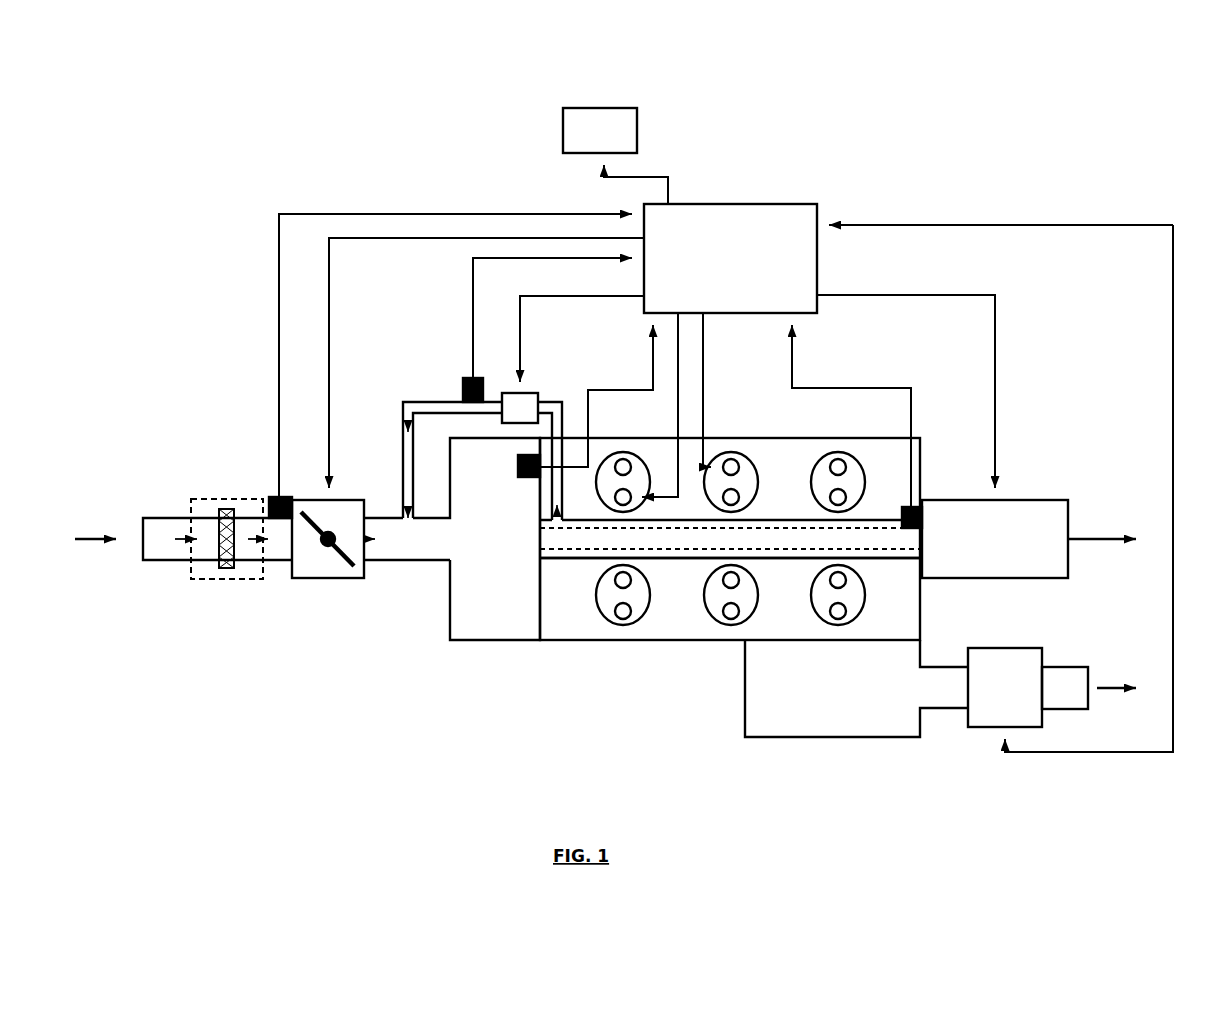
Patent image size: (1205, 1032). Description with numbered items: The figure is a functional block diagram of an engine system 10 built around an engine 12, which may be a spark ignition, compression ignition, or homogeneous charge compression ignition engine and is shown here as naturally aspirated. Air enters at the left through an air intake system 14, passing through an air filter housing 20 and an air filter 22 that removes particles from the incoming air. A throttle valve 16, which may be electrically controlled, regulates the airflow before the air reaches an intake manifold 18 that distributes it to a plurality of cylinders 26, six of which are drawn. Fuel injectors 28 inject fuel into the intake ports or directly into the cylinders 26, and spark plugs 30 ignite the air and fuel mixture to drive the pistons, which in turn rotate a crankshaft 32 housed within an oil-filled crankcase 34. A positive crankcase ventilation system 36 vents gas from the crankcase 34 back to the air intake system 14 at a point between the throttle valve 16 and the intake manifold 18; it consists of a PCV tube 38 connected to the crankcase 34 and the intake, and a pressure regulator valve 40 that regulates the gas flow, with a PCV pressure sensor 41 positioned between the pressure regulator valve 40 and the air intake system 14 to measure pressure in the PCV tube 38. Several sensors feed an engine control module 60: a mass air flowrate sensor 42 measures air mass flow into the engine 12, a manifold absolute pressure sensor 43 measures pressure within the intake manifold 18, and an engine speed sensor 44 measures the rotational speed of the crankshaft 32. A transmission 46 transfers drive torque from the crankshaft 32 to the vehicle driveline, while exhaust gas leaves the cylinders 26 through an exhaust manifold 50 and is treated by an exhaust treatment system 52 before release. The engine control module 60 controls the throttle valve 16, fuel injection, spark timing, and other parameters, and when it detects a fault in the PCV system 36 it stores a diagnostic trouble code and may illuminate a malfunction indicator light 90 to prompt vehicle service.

The engine system 10 is at (1033, 118).
The engine 12 is at (580, 641).
The air intake system 14 is at (158, 455).
The throttle valve 16 is at (327, 580).
The intake manifold 18 is at (495, 641).
The air filter housing 20 is at (216, 498).
The air filter 22 is at (226, 569).
The cylinders 26 is at (648, 598).
The fuel injectors 28 is at (830, 580).
The spark plugs 30 is at (738, 612).
The crankshaft 32 is at (663, 550).
The crankcase 34 is at (578, 560).
The positive crankcase ventilation system 36 is at (428, 322).
The PCV tube 38 is at (402, 490).
The pressure regulator valve 40 is at (527, 392).
The PCV pressure sensor 41 is at (463, 393).
The mass air flowrate sensor 42 is at (270, 497).
The manifold absolute pressure sensor 43 is at (519, 467).
The engine speed sensor 44 is at (912, 530).
The transmission 46 is at (995, 579).
The exhaust manifold 50 is at (830, 738).
The exhaust treatment system 52 is at (995, 648).
The engine control module 60 is at (783, 204).
The malfunction indicator light 90 is at (604, 108).